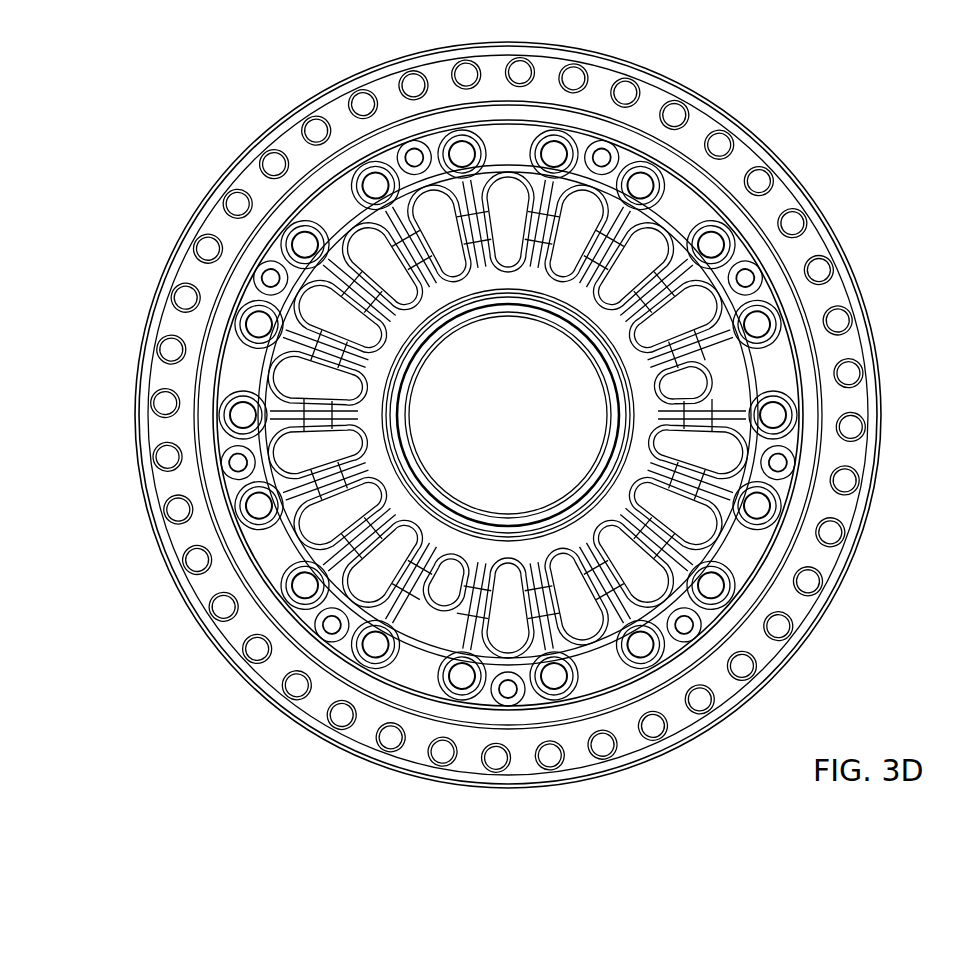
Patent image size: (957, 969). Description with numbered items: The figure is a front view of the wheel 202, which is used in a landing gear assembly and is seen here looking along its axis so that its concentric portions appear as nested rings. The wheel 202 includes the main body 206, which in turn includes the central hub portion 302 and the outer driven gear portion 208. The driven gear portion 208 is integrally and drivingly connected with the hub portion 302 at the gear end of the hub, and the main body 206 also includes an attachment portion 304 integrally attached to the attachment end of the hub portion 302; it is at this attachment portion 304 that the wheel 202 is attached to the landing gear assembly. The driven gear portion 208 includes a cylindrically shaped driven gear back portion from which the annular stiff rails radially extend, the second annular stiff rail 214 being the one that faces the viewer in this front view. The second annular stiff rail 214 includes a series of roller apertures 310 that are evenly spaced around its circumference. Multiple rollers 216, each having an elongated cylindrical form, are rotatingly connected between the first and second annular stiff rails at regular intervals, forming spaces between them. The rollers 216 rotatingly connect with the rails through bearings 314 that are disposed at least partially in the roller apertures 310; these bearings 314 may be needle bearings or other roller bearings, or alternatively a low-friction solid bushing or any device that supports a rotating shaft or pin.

The wheel 202 is at (848, 152).
The main body 206 is at (828, 240).
The driven gear portion 208 is at (870, 318).
The second annular stiff rail 214 is at (843, 572).
The rollers 216 is at (788, 634).
The hub portion 302 is at (733, 196).
The attachment portion 304 is at (740, 423).
The roller apertures 310 is at (757, 671).
The bearings 314 is at (722, 710).